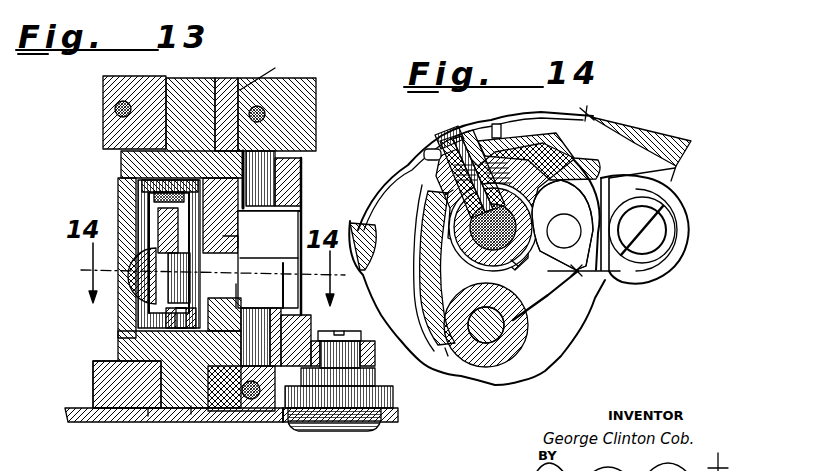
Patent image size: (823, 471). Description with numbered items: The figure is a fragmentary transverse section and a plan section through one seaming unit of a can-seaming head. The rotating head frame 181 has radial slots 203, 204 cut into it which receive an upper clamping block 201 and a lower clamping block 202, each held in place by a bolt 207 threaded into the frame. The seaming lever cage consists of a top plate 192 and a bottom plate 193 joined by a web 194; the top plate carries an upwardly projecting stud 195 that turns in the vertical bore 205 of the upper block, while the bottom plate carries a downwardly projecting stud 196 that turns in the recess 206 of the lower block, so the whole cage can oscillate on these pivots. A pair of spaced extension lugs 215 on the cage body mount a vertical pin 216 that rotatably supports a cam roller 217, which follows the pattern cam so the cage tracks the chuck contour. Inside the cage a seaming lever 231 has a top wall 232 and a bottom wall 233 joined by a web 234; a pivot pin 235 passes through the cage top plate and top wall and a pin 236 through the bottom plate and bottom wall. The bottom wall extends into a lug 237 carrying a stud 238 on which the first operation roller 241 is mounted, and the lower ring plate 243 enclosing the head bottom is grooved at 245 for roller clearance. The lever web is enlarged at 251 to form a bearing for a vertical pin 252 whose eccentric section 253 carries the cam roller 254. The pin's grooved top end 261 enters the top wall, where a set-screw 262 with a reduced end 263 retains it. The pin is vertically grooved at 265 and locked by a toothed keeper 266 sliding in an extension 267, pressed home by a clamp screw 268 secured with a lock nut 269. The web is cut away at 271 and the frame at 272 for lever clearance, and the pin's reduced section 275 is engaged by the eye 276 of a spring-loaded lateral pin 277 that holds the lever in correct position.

In FIG. 13, the head frame 181 is at (298, 99).
In FIG. 14, the head frame 181 is at (640, 118).
In FIG. 13, the top plate 192 is at (130, 147).
In FIG. 14, the bottom plate 193 is at (530, 293).
In FIG. 13, the web 194 is at (118, 202).
In FIG. 14, the web 194 is at (422, 262).
In FIG. 13, the upwardly projecting stud 195 is at (197, 70).
In FIG. 13, the downwardly projecting stud 196 is at (183, 398).
In FIG. 13, the upper clamping block 201 is at (110, 68).
In FIG. 13, the lower clamping block 202 is at (112, 405).
In FIG. 13, the radial slot 203 is at (267, 60).
In FIG. 13, the radial slot 204 is at (233, 413).
In FIG. 13, the vertical bore 205 is at (158, 78).
In FIG. 13, the recess 206 is at (140, 400).
In FIG. 13, the bolt 207 is at (107, 101).
In FIG. 14, the extension lug 215 is at (437, 340).
In FIG. 14, the pin 216 is at (480, 337).
In FIG. 14, the cam roller 217 is at (497, 340).
In FIG. 13, the seaming lever 231 is at (275, 255).
In FIG. 14, the seaming lever 231 is at (568, 262).
In FIG. 13, the top wall 232 is at (290, 183).
In FIG. 13, the bottom wall 233 is at (297, 300).
In FIG. 14, the bottom wall 233 is at (566, 215).
In FIG. 13, the web 234 is at (233, 227).
In FIG. 14, the web 234 is at (576, 155).
In FIG. 13, the pivot pin 235 is at (293, 157).
In FIG. 13, the pin 236 is at (300, 317).
In FIG. 14, the pin 236 is at (564, 231).
In FIG. 13, the lug 237 is at (365, 355).
In FIG. 14, the lug 237 is at (630, 203).
In FIG. 13, the stud 238 is at (347, 330).
In FIG. 14, the stud 238 is at (645, 222).
In FIG. 13, the first operation roller 241 is at (325, 397).
In FIG. 14, the first operation roller 241 is at (686, 237).
In FIG. 13, the lower ring plate 243 is at (73, 412).
In FIG. 13, the groove 245 is at (275, 412).
In FIG. 13, the enlargement 251 is at (155, 252).
In FIG. 14, the enlargement 251 is at (503, 252).
In FIG. 13, the pin 252 is at (228, 278).
In FIG. 14, the pin 252 is at (450, 230).
In FIG. 13, the eccentric section 253 is at (217, 231).
In FIG. 13, the cam roller 254 is at (247, 246).
In FIG. 13, the grooved top end 261 is at (175, 187).
In FIG. 13, the set-screw 262 is at (137, 175).
In FIG. 13, the reduced end 263 is at (134, 187).
In FIG. 14, the vertical grooves 265 is at (450, 217).
In FIG. 14, the toothed keeper 266 is at (440, 172).
In FIG. 14, the extension 267 is at (463, 135).
In FIG. 14, the clamp screw 268 is at (434, 128).
In FIG. 14, the lock nut 269 is at (420, 143).
In FIG. 13, the cut-away 271 is at (145, 293).
In FIG. 14, the cut-away 271 is at (437, 187).
In FIG. 14, the cut-away 272 is at (579, 106).
In FIG. 13, the reduced section 275 is at (153, 320).
In FIG. 13, the eye 276 is at (157, 310).
In FIG. 14, the pin 277 is at (491, 124).